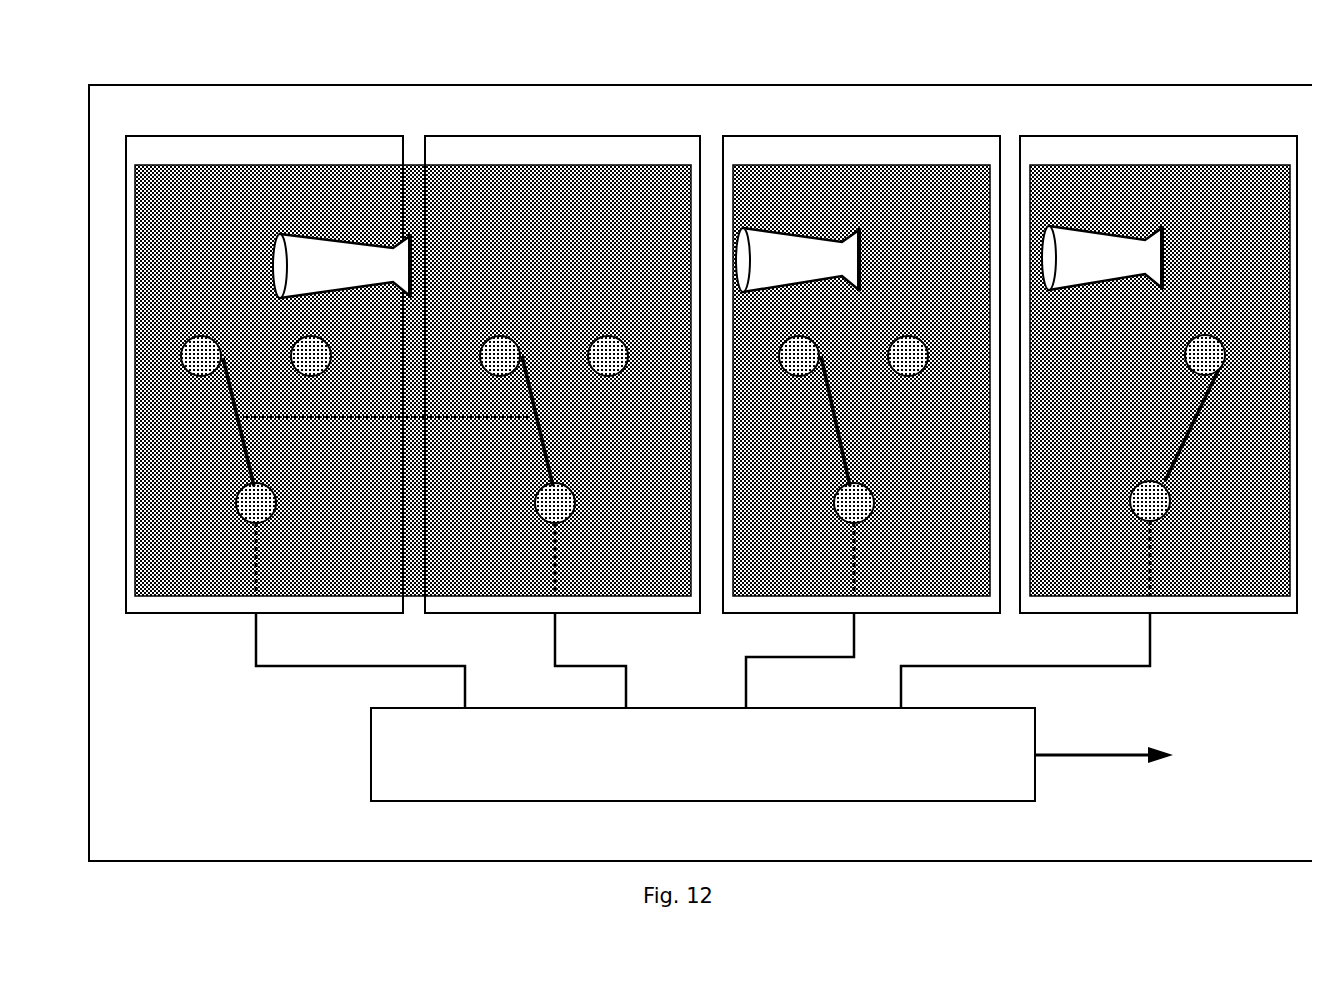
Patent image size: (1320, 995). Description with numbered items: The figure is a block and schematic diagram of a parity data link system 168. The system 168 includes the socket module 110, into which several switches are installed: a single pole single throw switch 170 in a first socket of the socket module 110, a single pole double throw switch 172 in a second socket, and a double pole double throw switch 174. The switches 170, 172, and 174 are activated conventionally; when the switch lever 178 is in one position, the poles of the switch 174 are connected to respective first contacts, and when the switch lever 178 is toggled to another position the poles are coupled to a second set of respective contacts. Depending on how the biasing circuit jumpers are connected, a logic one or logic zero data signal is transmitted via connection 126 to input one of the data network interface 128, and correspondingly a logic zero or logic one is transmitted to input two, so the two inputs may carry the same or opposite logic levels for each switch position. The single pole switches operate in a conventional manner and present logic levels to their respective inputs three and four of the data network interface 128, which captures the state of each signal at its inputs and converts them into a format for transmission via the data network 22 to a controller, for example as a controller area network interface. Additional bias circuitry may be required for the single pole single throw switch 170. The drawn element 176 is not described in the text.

The parity data link system 168 is at (685, 38).
The socket module 110 is at (893, 77).
The single pole single throw switch 170 is at (1068, 152).
The single pole double throw switch 172 is at (760, 157).
The double pole double throw switch 174 is at (465, 157).
The switch 176 is at (243, 463).
The switch lever 178 is at (307, 232).
The connection 126 is at (322, 660).
The data network interface 128 is at (475, 797).
The data network 22 is at (1110, 747).